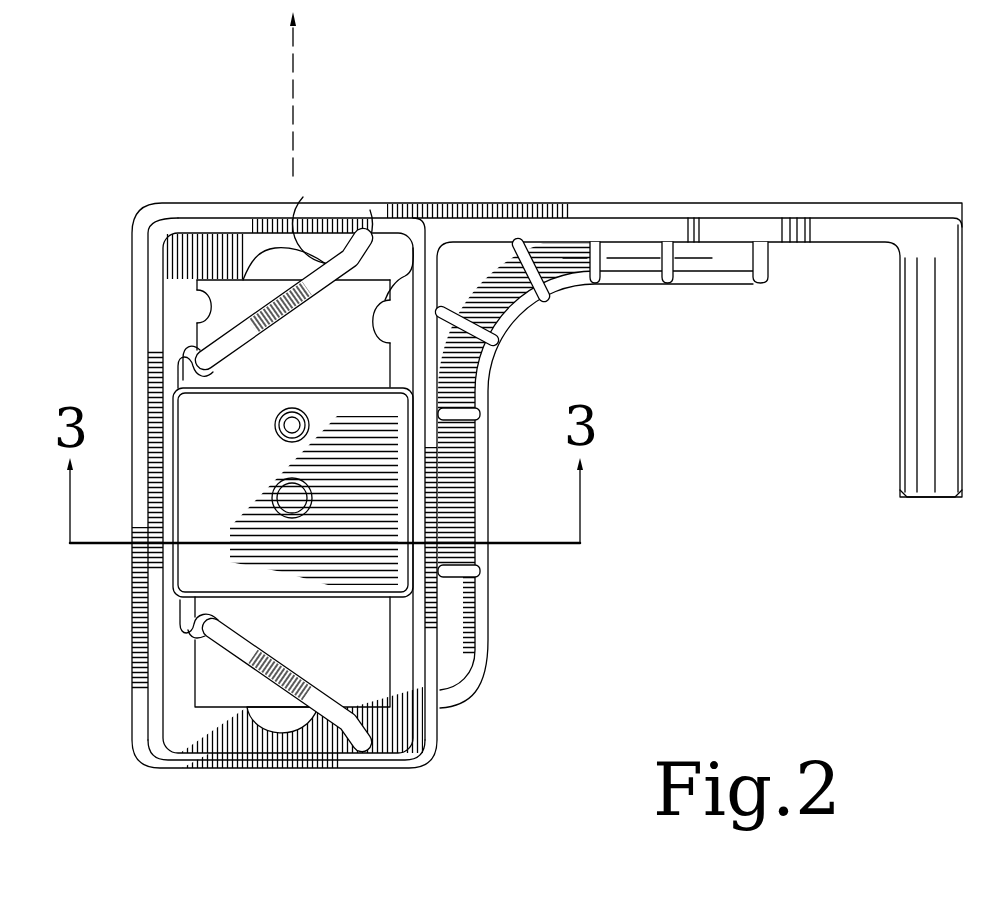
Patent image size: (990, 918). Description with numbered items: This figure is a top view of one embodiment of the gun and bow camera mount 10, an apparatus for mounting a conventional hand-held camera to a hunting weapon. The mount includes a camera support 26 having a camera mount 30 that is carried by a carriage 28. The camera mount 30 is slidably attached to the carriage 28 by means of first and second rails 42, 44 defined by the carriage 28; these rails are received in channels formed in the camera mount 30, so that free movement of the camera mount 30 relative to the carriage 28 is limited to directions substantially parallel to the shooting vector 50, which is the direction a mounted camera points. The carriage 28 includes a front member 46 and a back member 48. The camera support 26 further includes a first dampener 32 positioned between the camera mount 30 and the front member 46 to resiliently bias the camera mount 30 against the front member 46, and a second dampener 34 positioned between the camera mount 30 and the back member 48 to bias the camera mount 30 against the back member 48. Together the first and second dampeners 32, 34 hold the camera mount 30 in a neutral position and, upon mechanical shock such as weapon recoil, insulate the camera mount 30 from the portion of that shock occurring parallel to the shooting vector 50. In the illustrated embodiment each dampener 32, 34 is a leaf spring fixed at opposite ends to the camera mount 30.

The gun and bow camera mount 10 is at (186, 74).
The camera support 26 is at (97, 394).
The carriage 28 is at (138, 215).
The camera mount 30 is at (412, 490).
The first dampener 32 is at (303, 200).
The second dampener 34 is at (313, 738).
The first rail 42 is at (197, 290).
The second rail 44 is at (411, 240).
The front member 46 is at (392, 207).
The back member 48 is at (264, 768).
The shooting vector 50 is at (293, 52).